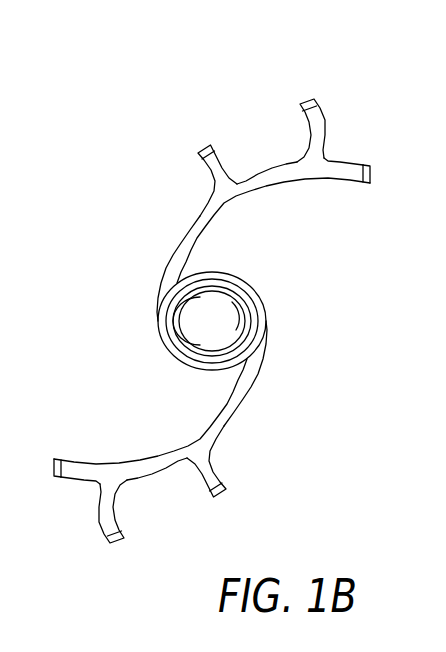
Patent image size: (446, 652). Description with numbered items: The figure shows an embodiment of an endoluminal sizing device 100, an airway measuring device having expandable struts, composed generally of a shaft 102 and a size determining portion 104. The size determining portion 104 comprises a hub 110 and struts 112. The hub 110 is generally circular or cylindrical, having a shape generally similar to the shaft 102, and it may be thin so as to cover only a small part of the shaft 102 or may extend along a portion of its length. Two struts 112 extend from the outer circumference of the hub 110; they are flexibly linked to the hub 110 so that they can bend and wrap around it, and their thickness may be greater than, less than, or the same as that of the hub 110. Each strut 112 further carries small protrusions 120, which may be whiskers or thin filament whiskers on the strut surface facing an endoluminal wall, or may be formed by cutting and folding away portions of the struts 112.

The endoluminal sizing device 100 is at (148, 104).
The shaft 102 is at (218, 320).
The size determining portion 104 is at (348, 164).
The hub 110 is at (166, 331).
The struts 112 is at (197, 218).
The small protrusions 120 is at (308, 118).